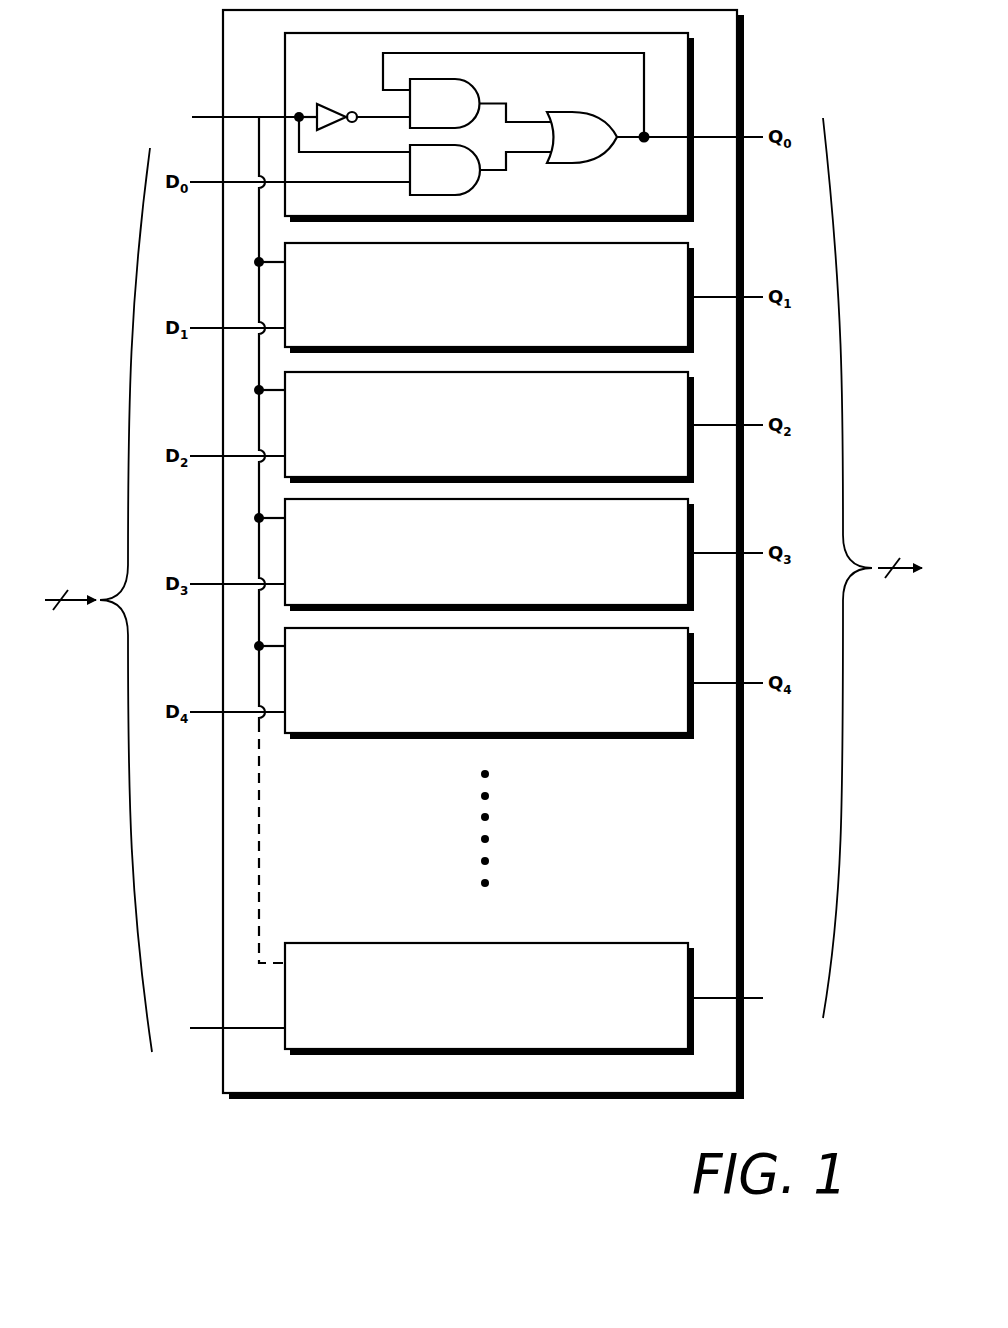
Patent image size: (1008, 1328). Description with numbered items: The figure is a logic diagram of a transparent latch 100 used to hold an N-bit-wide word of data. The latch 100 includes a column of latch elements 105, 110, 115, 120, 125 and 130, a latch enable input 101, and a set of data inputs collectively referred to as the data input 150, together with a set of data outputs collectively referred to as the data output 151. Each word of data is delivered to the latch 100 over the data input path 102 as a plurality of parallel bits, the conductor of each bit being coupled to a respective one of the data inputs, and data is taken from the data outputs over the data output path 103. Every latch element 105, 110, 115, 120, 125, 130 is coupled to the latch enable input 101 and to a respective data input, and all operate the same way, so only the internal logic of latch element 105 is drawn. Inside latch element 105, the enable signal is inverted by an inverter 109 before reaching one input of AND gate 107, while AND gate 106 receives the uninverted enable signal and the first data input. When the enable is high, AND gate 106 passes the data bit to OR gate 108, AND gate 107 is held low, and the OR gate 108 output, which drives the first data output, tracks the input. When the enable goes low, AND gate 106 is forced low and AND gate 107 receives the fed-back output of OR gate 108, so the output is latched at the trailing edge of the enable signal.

The transparent latch 100 is at (845, 56).
The latch enable input 101 is at (193, 115).
The data input path 102 is at (62, 553).
The data output path 103 is at (889, 522).
The latch element 105 is at (476, 127).
The AND gate 106 is at (481, 170).
The AND gate 107 is at (513, 95).
The OR gate 108 is at (655, 137).
The inverter 109 is at (333, 104).
The latch element 110 is at (489, 298).
The latch element 115 is at (489, 427).
The latch element 120 is at (489, 555).
The latch element 125 is at (489, 683).
The latch element 130 is at (489, 999).
The data input 150 is at (182, 1048).
The data output 151 is at (788, 1018).